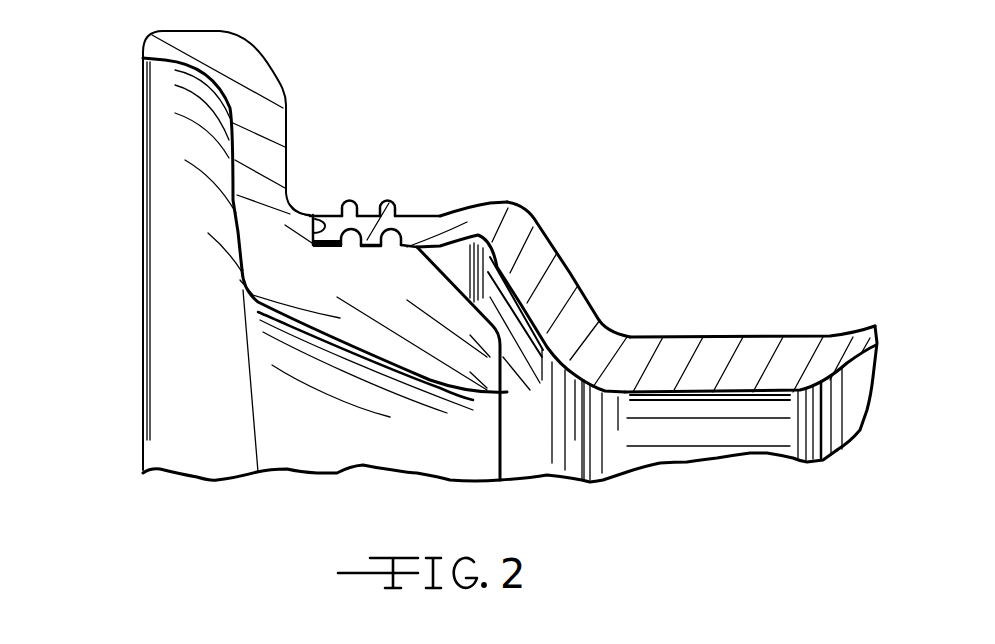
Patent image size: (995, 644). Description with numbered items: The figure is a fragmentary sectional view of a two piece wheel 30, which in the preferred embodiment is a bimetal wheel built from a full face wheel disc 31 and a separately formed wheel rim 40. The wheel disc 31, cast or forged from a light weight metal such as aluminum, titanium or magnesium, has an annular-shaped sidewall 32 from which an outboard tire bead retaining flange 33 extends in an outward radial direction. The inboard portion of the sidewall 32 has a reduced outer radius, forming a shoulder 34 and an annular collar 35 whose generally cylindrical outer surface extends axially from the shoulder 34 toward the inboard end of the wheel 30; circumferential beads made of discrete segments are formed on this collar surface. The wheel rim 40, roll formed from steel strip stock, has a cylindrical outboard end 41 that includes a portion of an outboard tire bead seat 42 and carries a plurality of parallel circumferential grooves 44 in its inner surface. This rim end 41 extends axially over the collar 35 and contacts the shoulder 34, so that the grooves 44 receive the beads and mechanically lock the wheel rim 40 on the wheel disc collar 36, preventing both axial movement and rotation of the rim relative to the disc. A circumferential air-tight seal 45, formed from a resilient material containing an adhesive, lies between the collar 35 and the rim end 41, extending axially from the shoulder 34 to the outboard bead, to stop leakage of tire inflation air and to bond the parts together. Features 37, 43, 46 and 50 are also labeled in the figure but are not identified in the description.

The two piece wheel 30 is at (500, 130).
The wheel disc 31 is at (163, 410).
The sidewall 32 is at (340, 322).
The outboard tire bead retaining flange 33 is at (258, 72).
The shoulder 34 is at (313, 220).
The annular collar 35 is at (457, 228).
The wheel disc collar 36 is at (348, 240).
The gasket bottom surface 37 is at (388, 250).
The wheel rim 40 is at (717, 352).
The cylindrical outboard end 41 is at (328, 215).
The outboard tire bead seat 42 is at (413, 215).
The gasket lower edge 43 is at (330, 215).
The circumferential grooves 44 is at (403, 247).
The circumferential air-tight seal 45 is at (343, 203).
The upper sealing bead 46 is at (387, 200).
The retaining hook 50 is at (312, 246).